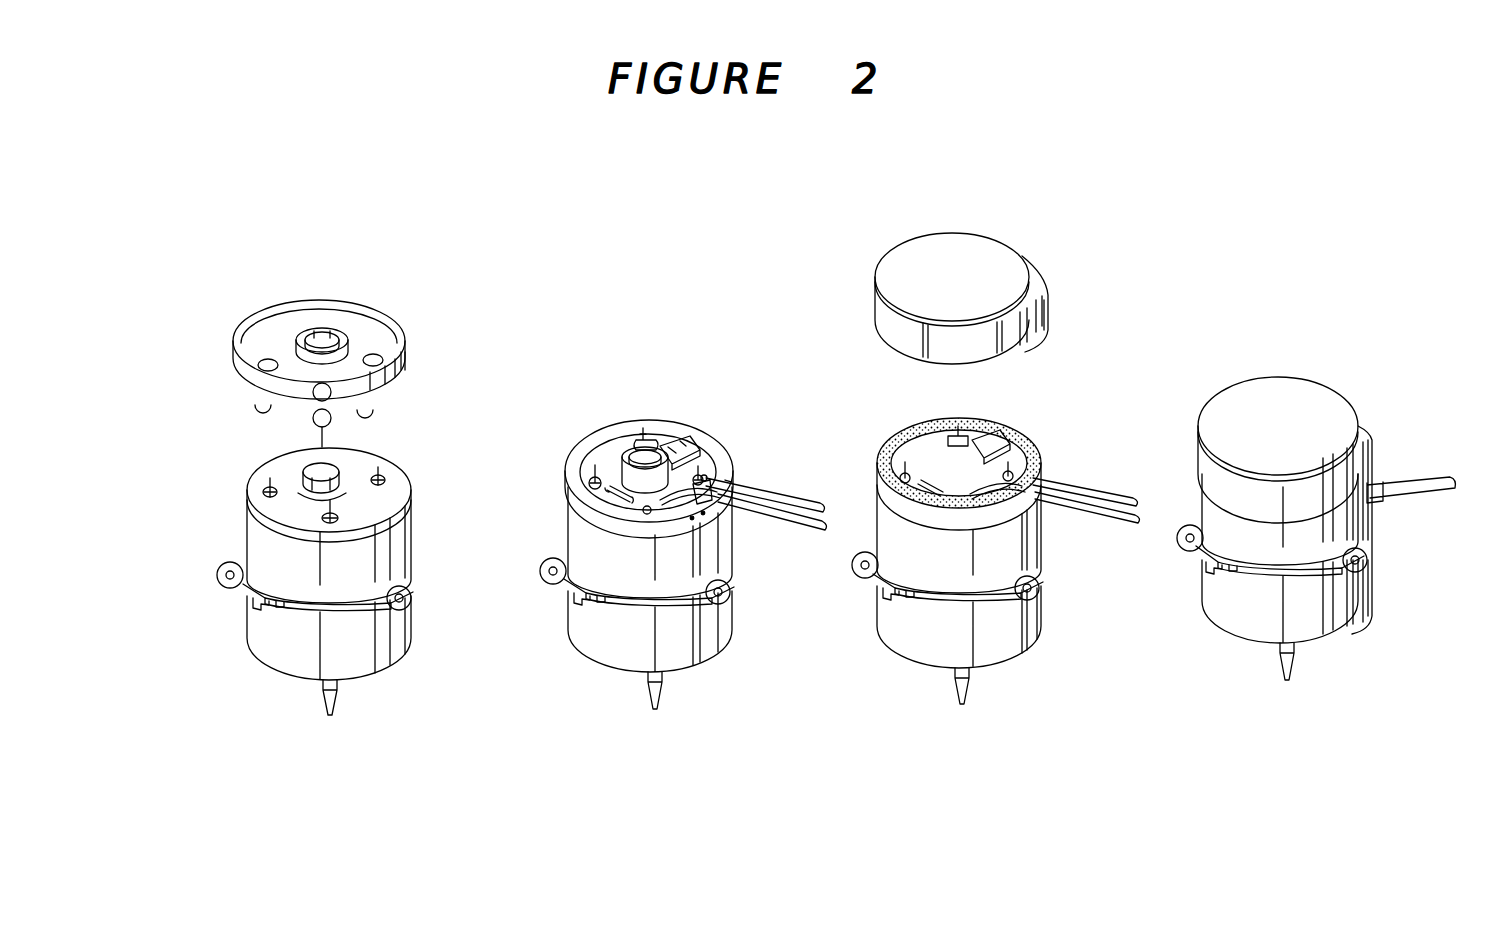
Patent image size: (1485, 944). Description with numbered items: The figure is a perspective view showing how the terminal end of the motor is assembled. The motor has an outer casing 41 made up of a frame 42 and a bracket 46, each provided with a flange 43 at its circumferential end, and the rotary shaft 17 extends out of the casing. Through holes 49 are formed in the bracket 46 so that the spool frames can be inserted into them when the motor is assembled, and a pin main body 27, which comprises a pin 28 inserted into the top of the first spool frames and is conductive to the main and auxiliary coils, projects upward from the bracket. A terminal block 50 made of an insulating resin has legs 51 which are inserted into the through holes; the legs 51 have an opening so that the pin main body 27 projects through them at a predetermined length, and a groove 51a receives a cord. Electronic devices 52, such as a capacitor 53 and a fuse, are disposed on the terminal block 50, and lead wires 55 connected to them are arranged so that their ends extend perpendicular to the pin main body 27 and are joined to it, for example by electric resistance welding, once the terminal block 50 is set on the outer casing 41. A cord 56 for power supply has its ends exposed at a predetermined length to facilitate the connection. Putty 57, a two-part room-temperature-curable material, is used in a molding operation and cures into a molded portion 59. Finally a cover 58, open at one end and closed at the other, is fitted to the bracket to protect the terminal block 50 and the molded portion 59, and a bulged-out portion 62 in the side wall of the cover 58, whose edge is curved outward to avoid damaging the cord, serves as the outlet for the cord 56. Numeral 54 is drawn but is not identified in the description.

The rotary shaft 17 is at (340, 692).
The pin main body 27 is at (386, 472).
The pin 28 is at (266, 488).
The outer casing 41 is at (404, 544).
The frame 42 is at (357, 652).
The flange 43 is at (216, 588).
The bracket 46 is at (362, 578).
The through holes 49 is at (398, 486).
The terminal block 50 is at (372, 318).
The legs 51 is at (384, 408).
The groove 51a is at (412, 356).
The electronic devices 52 is at (682, 436).
The capacitor 53 is at (652, 432).
The circuit board 54 is at (590, 503).
The lead wires 55 is at (590, 470).
The cord for power supply 56 is at (780, 512).
The putty 57 is at (1022, 450).
The cover 58 is at (968, 265).
The molded portion 59 is at (968, 418).
The bulged-out portion 62 is at (1050, 306).